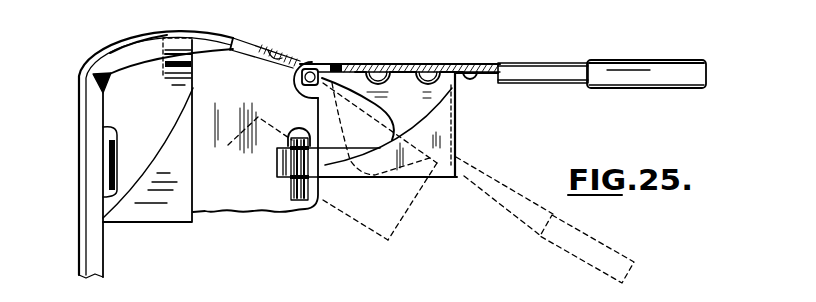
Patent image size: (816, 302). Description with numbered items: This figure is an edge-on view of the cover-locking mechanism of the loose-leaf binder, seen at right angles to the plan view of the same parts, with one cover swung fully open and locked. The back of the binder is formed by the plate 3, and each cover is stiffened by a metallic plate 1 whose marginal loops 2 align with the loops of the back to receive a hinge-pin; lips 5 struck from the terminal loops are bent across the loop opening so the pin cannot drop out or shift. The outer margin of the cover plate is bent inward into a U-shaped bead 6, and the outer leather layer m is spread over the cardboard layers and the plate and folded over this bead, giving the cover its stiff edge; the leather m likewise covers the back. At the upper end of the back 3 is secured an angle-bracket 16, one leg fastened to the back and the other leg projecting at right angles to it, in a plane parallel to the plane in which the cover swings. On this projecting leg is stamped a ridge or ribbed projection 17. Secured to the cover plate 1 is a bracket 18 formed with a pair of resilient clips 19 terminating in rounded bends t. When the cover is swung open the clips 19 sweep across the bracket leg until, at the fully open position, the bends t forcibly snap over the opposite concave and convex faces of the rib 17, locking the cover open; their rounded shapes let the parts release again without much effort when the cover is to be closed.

The outer leather layer m is at (90, 108).
The bends t is at (162, 67).
The metallic plate 1 is at (391, 64).
The loops 2 is at (302, 80).
The back plate 3 is at (309, 64).
The lips 5 is at (318, 71).
The U-shaped bend or bead 6 is at (562, 76).
The angle-bracket 16 is at (230, 193).
The ribbed projection 17 is at (107, 153).
The bracket 18 is at (418, 64).
The clips or resilient arms 19 is at (170, 132).